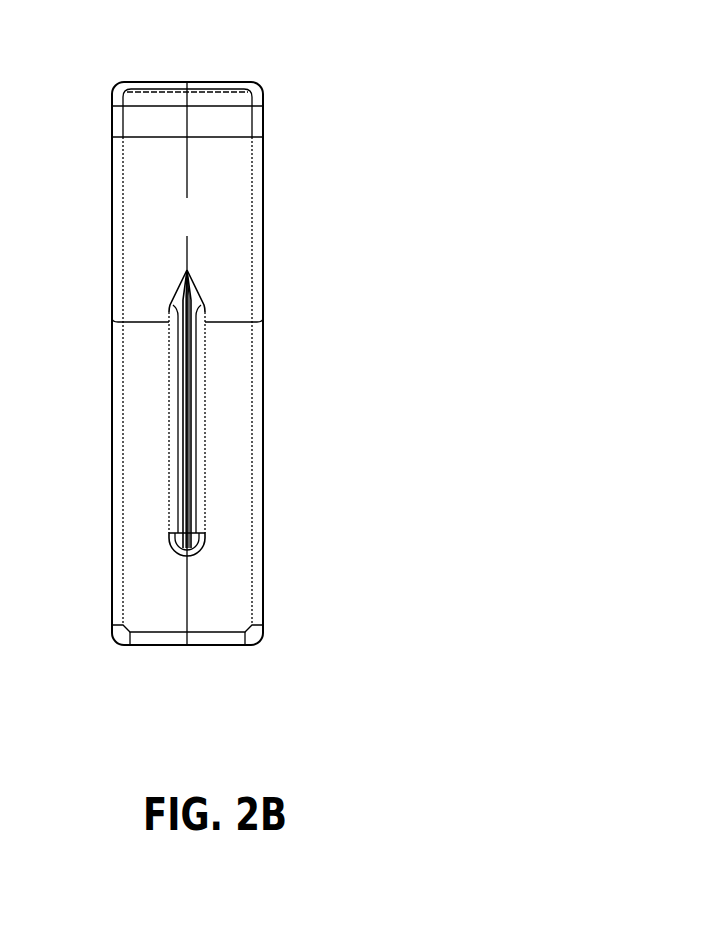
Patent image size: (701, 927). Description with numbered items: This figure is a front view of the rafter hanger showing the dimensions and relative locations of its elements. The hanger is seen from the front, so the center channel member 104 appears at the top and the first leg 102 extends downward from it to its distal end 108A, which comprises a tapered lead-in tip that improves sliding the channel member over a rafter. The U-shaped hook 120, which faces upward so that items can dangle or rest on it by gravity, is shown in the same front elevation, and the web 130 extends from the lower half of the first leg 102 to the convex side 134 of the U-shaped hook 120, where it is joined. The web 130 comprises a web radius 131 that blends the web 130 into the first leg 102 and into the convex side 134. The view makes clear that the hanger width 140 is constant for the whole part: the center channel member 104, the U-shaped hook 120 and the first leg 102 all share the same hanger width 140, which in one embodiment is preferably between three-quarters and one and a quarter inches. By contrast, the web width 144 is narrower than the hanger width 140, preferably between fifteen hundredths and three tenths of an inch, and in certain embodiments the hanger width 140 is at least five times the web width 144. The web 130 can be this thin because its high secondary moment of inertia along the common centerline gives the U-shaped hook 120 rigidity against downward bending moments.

The first leg 102 is at (218, 356).
The center channel member 104 is at (162, 83).
The distal end 108A is at (200, 645).
The U-shaped hook 120 is at (262, 195).
The web 130 is at (197, 411).
The web radius 131 is at (203, 387).
The convex side 134 is at (213, 231).
The hanger width 140 is at (35, 598).
The web width 144 is at (85, 434).